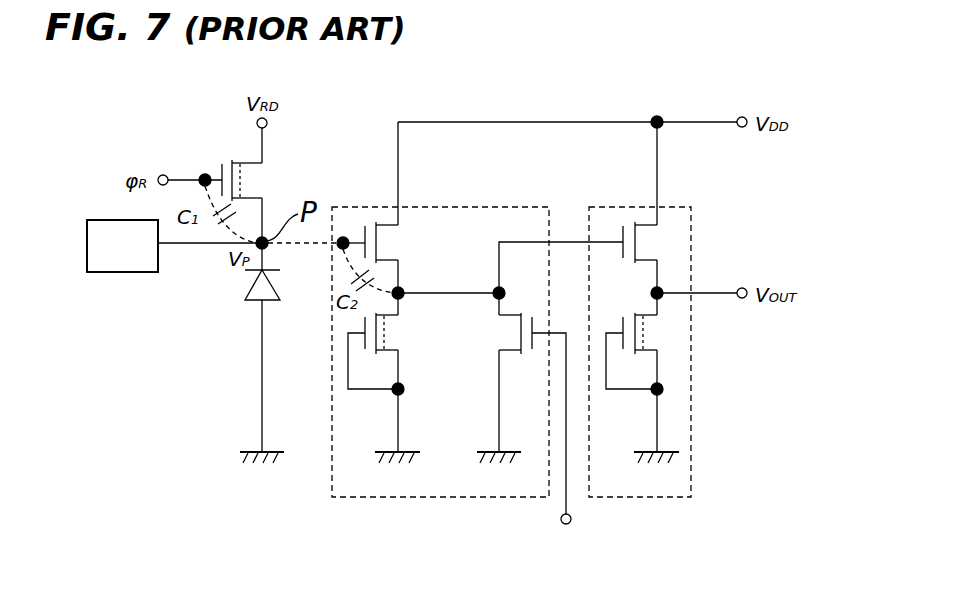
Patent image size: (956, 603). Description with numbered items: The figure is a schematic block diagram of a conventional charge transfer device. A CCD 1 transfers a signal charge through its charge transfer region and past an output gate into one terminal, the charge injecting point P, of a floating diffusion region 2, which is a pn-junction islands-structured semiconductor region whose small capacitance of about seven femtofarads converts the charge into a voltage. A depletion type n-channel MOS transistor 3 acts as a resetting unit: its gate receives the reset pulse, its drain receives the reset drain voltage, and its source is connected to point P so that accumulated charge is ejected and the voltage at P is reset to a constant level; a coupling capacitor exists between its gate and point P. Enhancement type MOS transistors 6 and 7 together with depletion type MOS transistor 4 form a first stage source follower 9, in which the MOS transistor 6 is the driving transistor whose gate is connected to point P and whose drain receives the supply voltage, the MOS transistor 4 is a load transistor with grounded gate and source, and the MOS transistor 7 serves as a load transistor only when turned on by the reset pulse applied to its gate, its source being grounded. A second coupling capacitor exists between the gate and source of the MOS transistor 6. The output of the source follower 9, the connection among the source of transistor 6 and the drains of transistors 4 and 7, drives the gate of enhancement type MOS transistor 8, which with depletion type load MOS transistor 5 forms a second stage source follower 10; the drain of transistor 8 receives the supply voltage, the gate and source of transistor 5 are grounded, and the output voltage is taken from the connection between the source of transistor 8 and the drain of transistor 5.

The CCD 1 is at (107, 272).
The floating diffusion region 2 is at (245, 294).
The MOS transistor 3 is at (258, 171).
The MOS transistor 4 is at (392, 334).
The MOS transistor 5 is at (652, 334).
The MOS transistor 6 is at (390, 244).
The MOS transistor 7 is at (528, 313).
The MOS transistor 8 is at (652, 243).
The first stage source follower 9 is at (417, 497).
The second stage source follower 10 is at (642, 497).